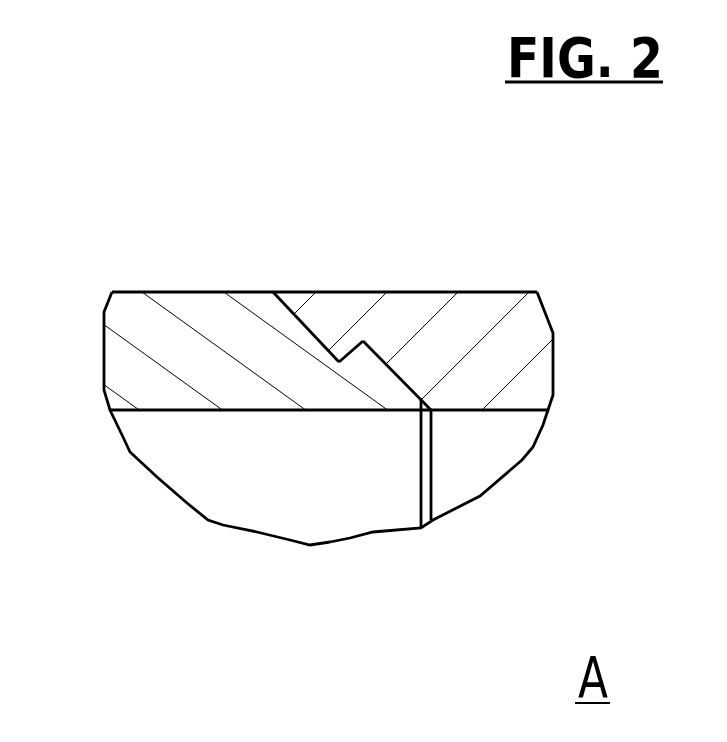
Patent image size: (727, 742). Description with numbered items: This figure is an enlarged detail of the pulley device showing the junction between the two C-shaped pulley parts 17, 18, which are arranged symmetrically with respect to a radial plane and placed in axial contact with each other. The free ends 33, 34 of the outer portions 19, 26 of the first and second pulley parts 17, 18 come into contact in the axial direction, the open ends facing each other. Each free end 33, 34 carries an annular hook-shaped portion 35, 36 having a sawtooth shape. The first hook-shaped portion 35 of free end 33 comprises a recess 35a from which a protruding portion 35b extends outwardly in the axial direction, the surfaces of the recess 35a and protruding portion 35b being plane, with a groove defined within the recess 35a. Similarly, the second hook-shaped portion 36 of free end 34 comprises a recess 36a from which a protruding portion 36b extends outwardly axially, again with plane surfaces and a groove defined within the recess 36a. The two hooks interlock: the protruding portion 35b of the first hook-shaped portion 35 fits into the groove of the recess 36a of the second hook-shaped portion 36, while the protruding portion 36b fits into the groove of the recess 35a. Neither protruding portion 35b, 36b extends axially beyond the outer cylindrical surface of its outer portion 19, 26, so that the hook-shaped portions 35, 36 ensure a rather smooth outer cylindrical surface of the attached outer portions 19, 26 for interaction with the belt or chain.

The first pulley part 17 is at (180, 425).
The second pulley part 18 is at (490, 425).
The outer portion of first pulley part 19 is at (123, 376).
The outer portion of second pulley part 26 is at (535, 375).
The free end of first outer portion 33 is at (172, 292).
The free end of second outer portion 34 is at (483, 292).
The first hook-shaped portion 35 is at (275, 373).
The recess of first hook-shaped portion 35a is at (312, 333).
The protruding portion of first hook-shaped portion 35b is at (370, 362).
The second hook-shaped portion 36 is at (429, 357).
The recess of second hook-shaped portion 36a is at (430, 510).
The protruding portion of second hook-shaped portion 36b is at (339, 540).